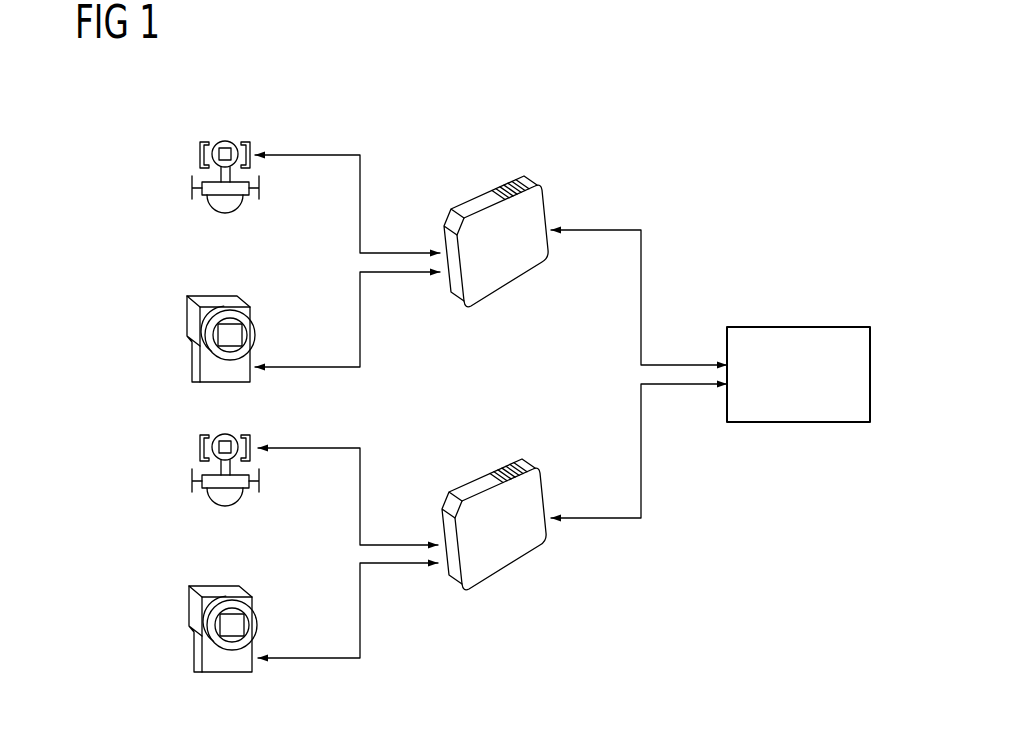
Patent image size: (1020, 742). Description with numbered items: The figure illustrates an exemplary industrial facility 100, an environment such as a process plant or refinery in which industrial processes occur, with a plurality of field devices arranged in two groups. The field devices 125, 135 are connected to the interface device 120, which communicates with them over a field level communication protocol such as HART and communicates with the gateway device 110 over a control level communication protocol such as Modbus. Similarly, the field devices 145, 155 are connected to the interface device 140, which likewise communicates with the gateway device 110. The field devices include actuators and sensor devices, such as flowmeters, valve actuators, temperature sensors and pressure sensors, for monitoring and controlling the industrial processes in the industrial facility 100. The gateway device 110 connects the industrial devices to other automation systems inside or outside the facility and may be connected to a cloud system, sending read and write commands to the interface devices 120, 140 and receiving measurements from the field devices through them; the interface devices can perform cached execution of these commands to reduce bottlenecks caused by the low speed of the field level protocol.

The industrial facility 100 is at (713, 124).
The gateway device 110 is at (797, 327).
The interface device 120 is at (467, 203).
The field device 125 is at (200, 153).
The field device 135 is at (187, 318).
The interface device 140 is at (465, 486).
The field device 145 is at (200, 446).
The field device 155 is at (189, 608).